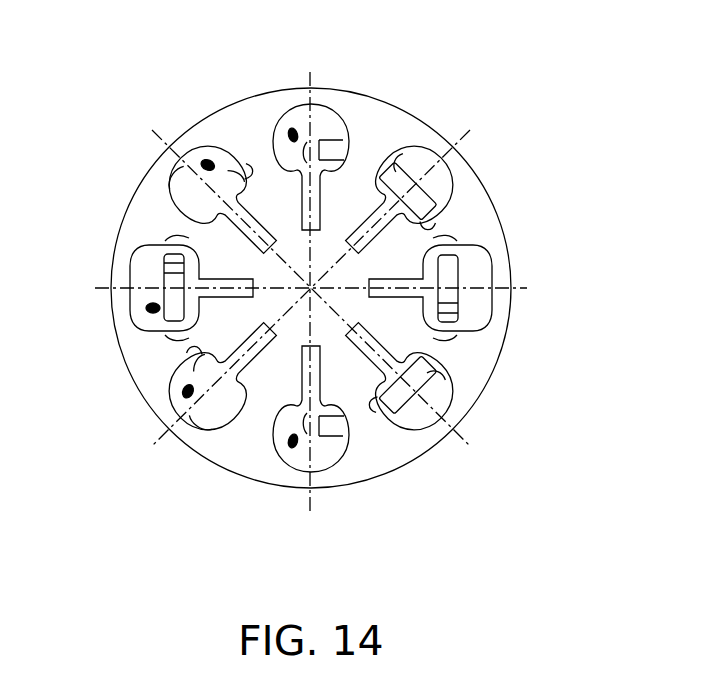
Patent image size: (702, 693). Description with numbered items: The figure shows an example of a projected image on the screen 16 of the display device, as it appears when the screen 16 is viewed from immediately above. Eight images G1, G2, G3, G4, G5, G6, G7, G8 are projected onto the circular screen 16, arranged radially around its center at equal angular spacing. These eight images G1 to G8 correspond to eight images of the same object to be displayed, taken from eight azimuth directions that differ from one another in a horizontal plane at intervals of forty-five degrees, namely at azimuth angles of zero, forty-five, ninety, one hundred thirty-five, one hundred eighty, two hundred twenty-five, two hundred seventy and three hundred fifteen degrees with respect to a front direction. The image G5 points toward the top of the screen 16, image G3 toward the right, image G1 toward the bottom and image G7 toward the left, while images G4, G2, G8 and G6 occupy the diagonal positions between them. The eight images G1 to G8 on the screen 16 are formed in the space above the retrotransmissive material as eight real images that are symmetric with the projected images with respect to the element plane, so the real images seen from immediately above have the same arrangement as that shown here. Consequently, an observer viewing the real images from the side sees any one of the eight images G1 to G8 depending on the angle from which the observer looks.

The screen 16 is at (383, 127).
The image G1 is at (327, 453).
The image G2 is at (447, 393).
The image G3 is at (482, 267).
The image G4 is at (445, 182).
The image G5 is at (326, 103).
The image G6 is at (175, 180).
The image G7 is at (140, 268).
The image G8 is at (173, 393).